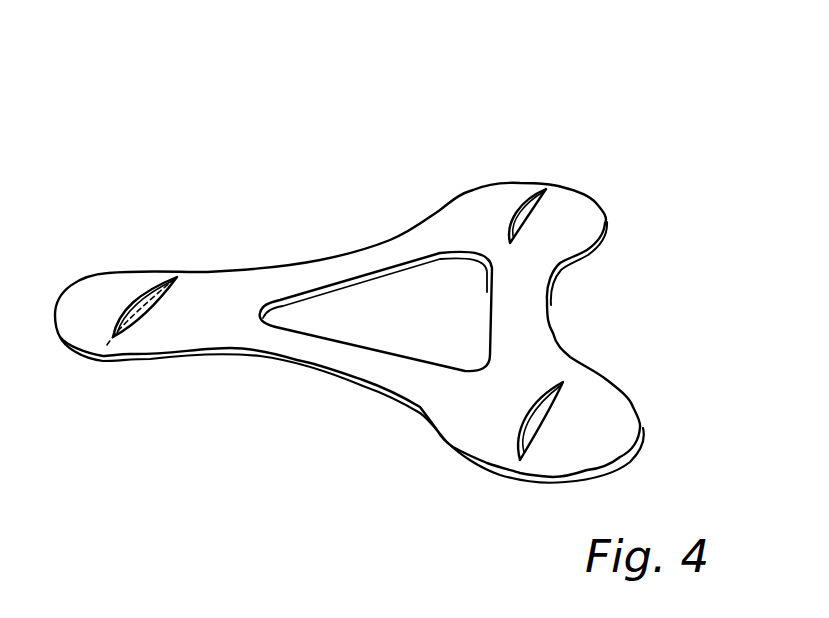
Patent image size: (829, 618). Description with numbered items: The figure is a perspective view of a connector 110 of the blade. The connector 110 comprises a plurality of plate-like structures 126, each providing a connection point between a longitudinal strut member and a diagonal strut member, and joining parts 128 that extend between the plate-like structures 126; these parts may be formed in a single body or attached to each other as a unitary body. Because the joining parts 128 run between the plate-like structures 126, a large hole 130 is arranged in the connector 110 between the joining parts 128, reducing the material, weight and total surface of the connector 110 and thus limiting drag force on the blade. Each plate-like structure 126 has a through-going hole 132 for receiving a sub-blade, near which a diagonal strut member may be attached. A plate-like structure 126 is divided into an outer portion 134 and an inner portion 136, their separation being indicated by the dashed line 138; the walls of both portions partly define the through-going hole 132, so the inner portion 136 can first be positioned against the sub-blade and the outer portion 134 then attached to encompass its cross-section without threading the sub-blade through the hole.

The connector 110 is at (327, 157).
The plate-like structure 126 is at (572, 212).
The joining part 128 is at (538, 318).
The large hole 130 is at (410, 345).
The through-going hole 132 is at (513, 210).
The outer portion 134 is at (133, 297).
The inner portion 136 is at (150, 333).
The dashed line 138 is at (150, 287).